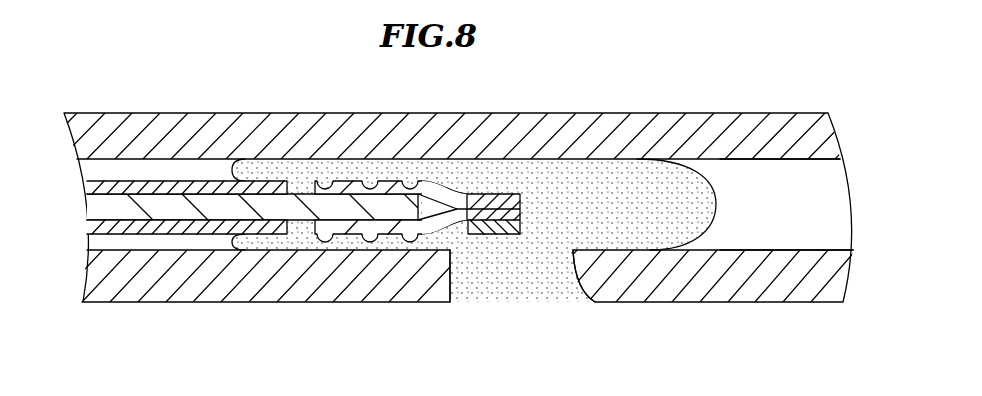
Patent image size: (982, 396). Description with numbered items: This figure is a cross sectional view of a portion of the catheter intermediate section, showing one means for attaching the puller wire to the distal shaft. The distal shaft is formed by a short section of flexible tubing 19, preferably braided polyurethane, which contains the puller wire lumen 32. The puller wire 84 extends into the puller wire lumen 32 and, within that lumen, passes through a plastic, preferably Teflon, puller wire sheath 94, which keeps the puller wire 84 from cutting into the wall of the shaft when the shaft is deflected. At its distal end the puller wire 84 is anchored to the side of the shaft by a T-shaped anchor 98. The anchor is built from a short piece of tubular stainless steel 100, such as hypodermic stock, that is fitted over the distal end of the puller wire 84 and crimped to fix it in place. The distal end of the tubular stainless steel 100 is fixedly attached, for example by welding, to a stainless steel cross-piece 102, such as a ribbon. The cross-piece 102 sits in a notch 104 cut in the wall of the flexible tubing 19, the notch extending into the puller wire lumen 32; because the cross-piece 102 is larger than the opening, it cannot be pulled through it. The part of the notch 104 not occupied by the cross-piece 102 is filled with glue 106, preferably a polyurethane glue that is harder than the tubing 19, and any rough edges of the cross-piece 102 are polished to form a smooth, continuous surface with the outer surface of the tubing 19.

The tubing 19 is at (740, 302).
The puller wire lumen 32 is at (820, 184).
The puller wire 84 is at (117, 209).
The puller wire sheath 94 is at (92, 193).
The T-shaped anchor 98 is at (507, 192).
The tubular stainless steel 100 is at (347, 225).
The cross-piece 102 is at (487, 234).
The notch 104 is at (452, 280).
The glue 106 is at (556, 283).